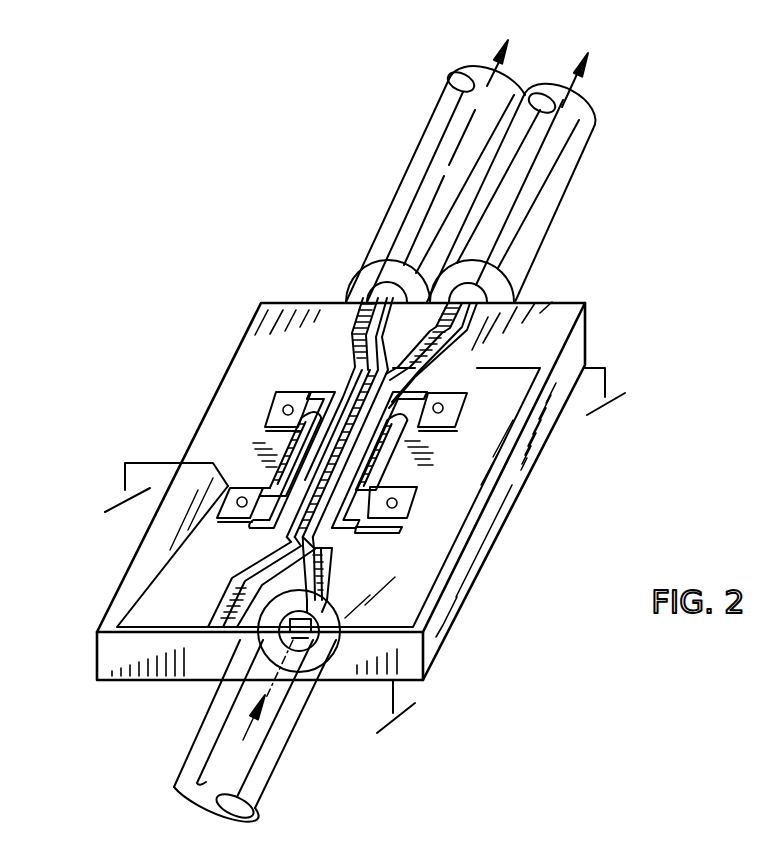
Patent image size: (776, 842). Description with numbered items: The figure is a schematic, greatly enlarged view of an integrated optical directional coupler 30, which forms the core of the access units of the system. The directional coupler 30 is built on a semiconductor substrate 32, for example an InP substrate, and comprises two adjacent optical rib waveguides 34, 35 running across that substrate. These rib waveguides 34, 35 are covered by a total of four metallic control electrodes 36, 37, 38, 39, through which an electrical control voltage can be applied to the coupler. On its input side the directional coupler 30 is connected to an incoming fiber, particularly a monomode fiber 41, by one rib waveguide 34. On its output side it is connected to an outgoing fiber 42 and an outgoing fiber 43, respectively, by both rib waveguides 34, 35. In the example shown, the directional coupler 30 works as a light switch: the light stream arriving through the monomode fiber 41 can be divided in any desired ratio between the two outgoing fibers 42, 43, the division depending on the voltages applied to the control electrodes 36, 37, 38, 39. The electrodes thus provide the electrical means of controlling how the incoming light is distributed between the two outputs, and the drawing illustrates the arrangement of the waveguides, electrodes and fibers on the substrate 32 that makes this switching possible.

The integrated optical directional coupler 30 is at (200, 674).
The semiconductor substrate 32 is at (437, 631).
The optical rib waveguide 34 is at (477, 317).
The optical rib waveguide 35 is at (362, 318).
The metallic control electrode 36 is at (443, 413).
The metallic control electrode 37 is at (407, 533).
The metallic control electrode 38 is at (207, 533).
The metallic control electrode 39 is at (287, 408).
The monomode fiber 41 is at (268, 768).
The outgoing fiber 42 is at (540, 222).
The outgoing fiber 43 is at (405, 188).